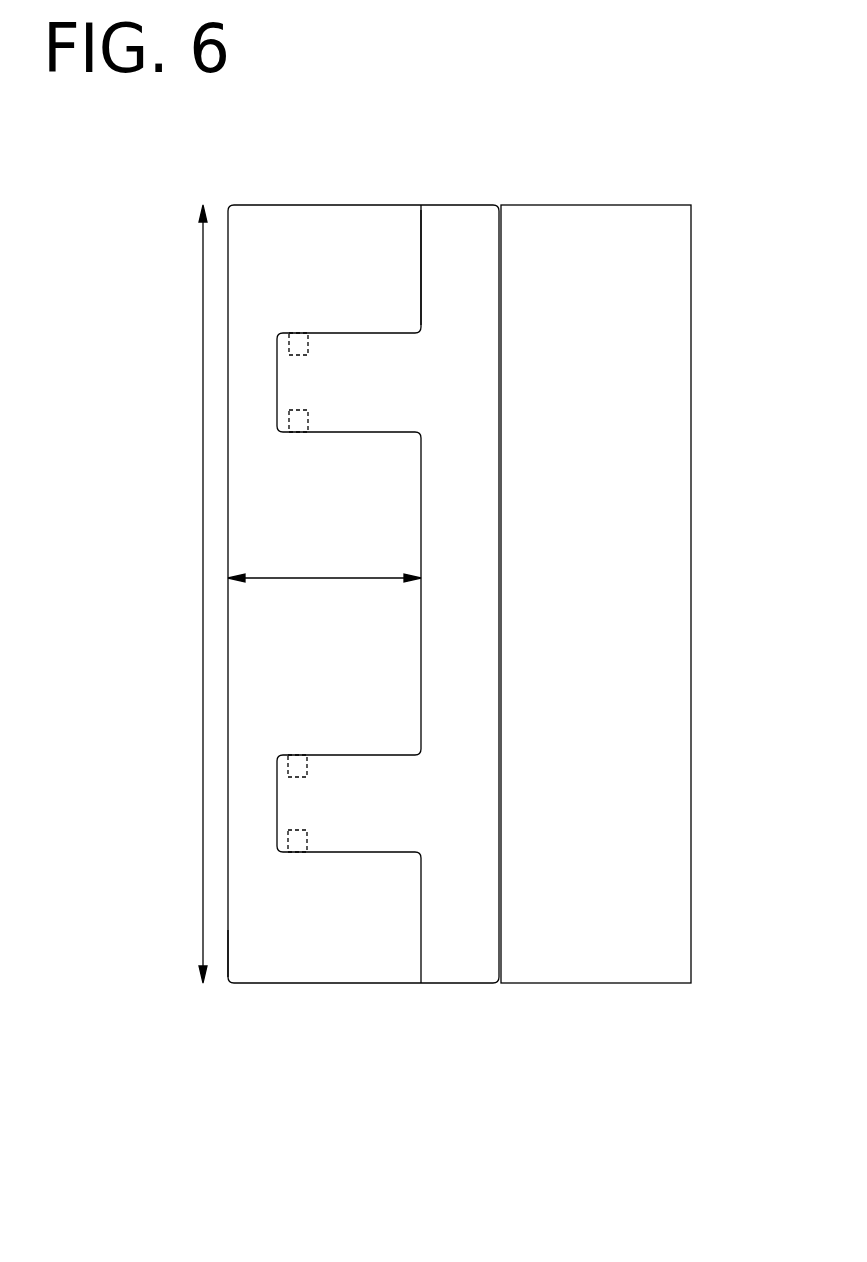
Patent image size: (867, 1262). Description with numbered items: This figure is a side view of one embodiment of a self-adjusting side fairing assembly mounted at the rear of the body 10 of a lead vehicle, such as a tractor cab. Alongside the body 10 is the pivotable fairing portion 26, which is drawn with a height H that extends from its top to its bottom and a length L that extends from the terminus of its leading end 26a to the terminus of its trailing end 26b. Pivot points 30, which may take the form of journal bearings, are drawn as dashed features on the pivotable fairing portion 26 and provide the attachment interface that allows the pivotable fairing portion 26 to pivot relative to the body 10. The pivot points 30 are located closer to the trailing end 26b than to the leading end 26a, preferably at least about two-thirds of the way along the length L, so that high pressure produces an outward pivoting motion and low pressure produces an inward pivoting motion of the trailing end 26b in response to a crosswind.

The body 10 is at (657, 340).
The pivotable fairing portion 26 is at (475, 225).
The leading end 26a is at (422, 278).
The trailing end 26b is at (226, 968).
The pivot points 30 is at (283, 333).
The height H is at (202, 680).
The length L is at (325, 576).